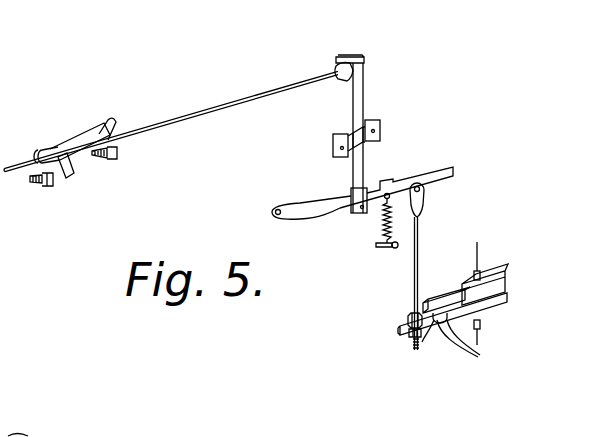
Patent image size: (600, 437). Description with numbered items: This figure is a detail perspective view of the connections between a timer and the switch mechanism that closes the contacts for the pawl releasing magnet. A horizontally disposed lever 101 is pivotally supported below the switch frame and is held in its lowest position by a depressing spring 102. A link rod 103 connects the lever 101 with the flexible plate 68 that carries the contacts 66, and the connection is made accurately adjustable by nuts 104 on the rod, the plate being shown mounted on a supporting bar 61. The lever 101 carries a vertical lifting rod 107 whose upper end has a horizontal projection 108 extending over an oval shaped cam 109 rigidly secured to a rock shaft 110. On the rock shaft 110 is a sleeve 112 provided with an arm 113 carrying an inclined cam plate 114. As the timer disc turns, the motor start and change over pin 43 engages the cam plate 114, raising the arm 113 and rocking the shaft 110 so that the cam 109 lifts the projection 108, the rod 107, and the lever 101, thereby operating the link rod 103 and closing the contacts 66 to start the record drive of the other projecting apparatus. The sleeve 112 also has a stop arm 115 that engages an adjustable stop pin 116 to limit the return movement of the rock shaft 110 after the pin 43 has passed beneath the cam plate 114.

The motor start and change over pin 43 is at (115, 156).
The bar 61 is at (400, 332).
The contacts 66 is at (461, 345).
The flexible plate 68 is at (450, 298).
The lever 101 is at (441, 168).
The depressing spring 102 is at (385, 220).
The link rod 103 is at (421, 237).
The nuts 104 is at (408, 320).
The vertical lifting rod 107 is at (366, 108).
The horizontal projection 108 is at (355, 57).
The oval shaped cam 109 is at (338, 68).
The rock shaft 110 is at (177, 120).
The sleeve 112 is at (57, 150).
The arm 113 is at (75, 145).
The inclined cam plate 114 is at (111, 128).
The stop arm 115 is at (69, 175).
The adjustable stop pin 116 is at (46, 187).